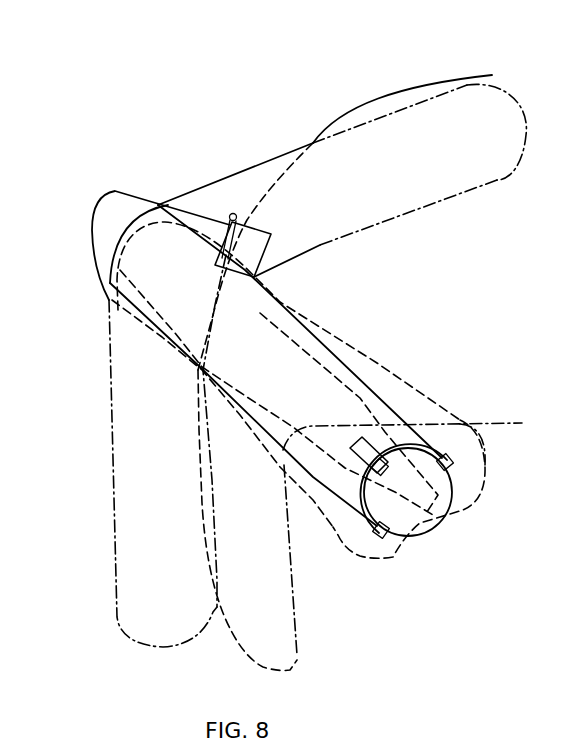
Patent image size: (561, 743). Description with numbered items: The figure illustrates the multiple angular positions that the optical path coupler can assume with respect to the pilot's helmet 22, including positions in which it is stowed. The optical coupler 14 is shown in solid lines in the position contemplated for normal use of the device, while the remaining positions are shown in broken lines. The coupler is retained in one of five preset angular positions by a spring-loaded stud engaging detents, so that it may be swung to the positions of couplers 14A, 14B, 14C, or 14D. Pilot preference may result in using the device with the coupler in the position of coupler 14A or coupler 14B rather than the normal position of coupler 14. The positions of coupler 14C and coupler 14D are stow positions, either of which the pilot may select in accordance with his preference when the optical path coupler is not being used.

The helmet 22 is at (382, 97).
The optical coupler 14 is at (293, 310).
The optical coupler in first alternate use position 14A is at (337, 538).
The optical coupler in second alternate use position 14B is at (377, 362).
The optical coupler in first stow position 14C is at (115, 580).
The optical coupler in second stow position 14D is at (370, 229).